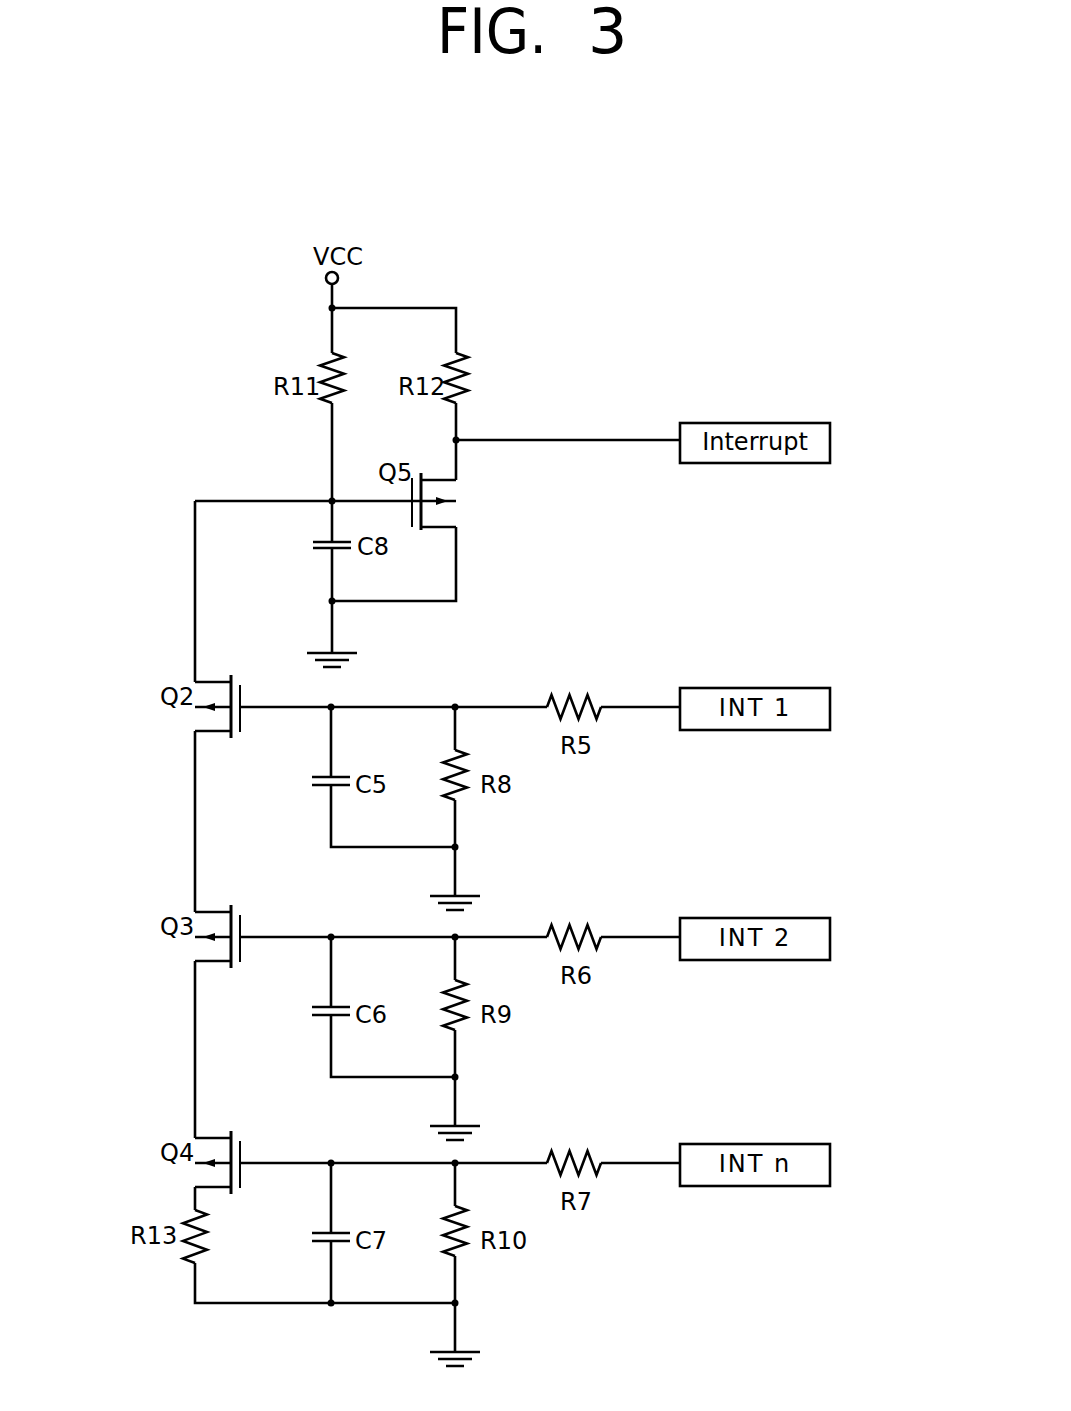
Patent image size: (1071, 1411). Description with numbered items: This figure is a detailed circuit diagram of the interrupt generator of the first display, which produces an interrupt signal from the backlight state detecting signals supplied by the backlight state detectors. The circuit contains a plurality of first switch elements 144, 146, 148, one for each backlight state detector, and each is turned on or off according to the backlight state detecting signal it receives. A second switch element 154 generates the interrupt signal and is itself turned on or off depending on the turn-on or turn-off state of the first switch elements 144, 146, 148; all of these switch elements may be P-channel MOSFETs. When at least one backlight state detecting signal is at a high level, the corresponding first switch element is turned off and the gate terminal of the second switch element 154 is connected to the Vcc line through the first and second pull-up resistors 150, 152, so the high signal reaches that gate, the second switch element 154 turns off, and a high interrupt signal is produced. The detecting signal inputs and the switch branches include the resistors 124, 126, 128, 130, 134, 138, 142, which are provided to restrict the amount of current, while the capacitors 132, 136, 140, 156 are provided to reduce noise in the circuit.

The resistor R11 150 is at (322, 352).
The resistor R12 152 is at (463, 385).
The second switch element 154 is at (444, 527).
The capacitor 156 is at (318, 548).
The resistor 124 is at (556, 695).
The resistor 126 is at (556, 925).
The resistor 128 is at (556, 1151).
The resistor 130 is at (465, 797).
The resistor 134 is at (465, 1027).
The resistor 138 is at (465, 1253).
The capacitor 132 is at (318, 784).
The capacitor 136 is at (318, 1014).
The capacitor 140 is at (318, 1240).
The first switch element 144 is at (195, 719).
The first switch element 146 is at (195, 949).
The first switch element 148 is at (195, 1175).
The resistor 142 is at (178, 1250).